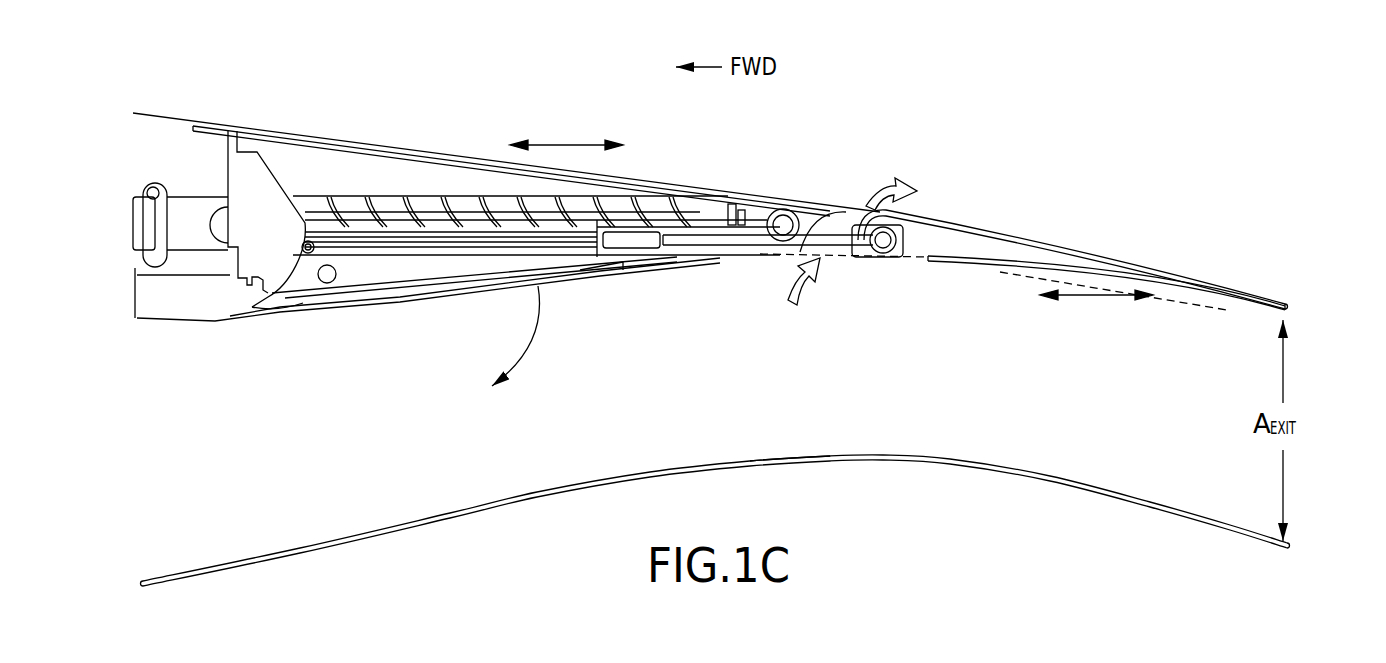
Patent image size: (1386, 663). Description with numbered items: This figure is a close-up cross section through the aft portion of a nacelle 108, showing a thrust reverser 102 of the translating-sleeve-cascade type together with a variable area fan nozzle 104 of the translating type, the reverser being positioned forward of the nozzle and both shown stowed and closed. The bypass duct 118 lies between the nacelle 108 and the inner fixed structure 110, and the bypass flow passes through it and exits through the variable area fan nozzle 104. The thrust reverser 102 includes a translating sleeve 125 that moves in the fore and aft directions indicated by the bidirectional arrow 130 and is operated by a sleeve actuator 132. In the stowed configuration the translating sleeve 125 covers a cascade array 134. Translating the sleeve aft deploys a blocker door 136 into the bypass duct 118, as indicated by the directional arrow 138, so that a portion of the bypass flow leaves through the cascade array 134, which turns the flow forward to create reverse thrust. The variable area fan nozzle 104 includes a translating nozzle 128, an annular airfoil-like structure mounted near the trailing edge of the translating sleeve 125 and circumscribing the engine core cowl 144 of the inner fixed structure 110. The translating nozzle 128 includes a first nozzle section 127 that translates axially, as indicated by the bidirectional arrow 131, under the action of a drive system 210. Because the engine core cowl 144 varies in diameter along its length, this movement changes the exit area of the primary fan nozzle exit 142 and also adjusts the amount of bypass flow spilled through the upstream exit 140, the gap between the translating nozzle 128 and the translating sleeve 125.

The thrust reverser 102 is at (468, 74).
The variable area fan nozzle 104 is at (1020, 148).
The nacelle 108 is at (173, 112).
The inner fixed structure 110 is at (537, 492).
The bypass duct 118 is at (317, 441).
The translating sleeve 125 is at (400, 145).
The first nozzle section 127 is at (958, 245).
The translating nozzle 128 is at (1082, 252).
The bidirectional arrow 130 is at (573, 141).
The bidirectional arrow 131 is at (1098, 297).
The sleeve actuator 132 is at (367, 232).
The cascade array 134 is at (497, 216).
The blocker door 136 is at (442, 288).
The directional arrow 138 is at (525, 345).
The upstream exit 140 is at (848, 232).
The primary fan nozzle exit 142 is at (1308, 322).
The engine core cowl 144 is at (797, 461).
The drive system 210 is at (733, 247).